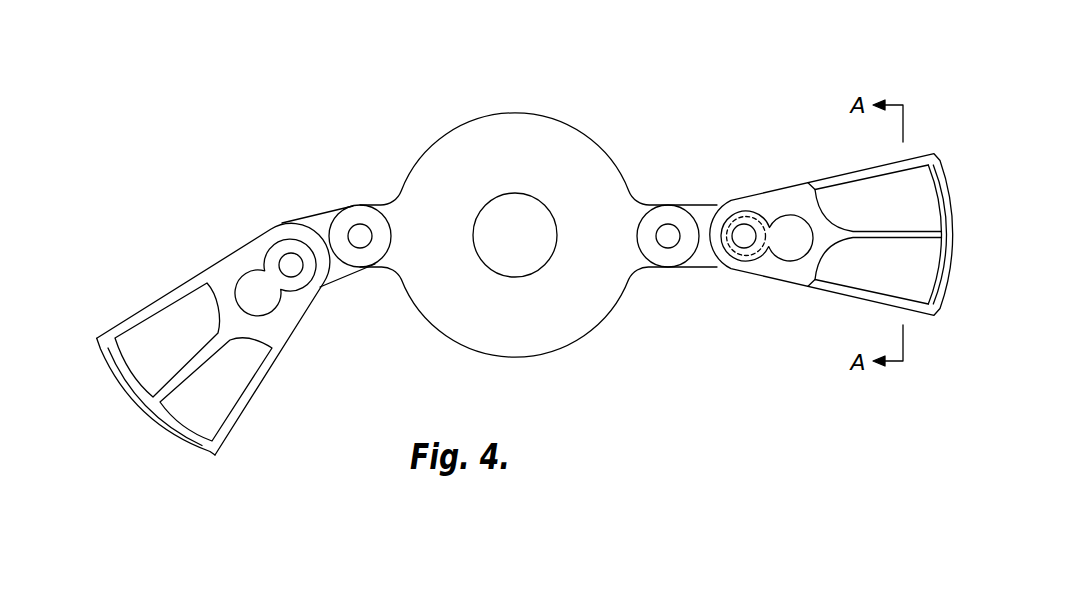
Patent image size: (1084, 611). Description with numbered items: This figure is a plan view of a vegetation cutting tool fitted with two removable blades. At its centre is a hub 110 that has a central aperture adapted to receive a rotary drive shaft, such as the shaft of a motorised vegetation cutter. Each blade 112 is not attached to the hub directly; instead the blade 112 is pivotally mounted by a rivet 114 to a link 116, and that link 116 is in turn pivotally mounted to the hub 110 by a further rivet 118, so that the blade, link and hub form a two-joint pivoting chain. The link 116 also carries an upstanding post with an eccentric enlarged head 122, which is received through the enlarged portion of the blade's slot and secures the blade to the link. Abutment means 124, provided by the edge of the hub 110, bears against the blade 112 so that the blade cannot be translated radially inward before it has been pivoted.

The hub 110 is at (462, 133).
The blade 112 is at (177, 288).
The rivet 114 is at (282, 257).
The link 116 is at (697, 205).
The rivet 118 is at (353, 228).
The enlarged head 122 is at (740, 261).
The abutment means 124 is at (337, 283).